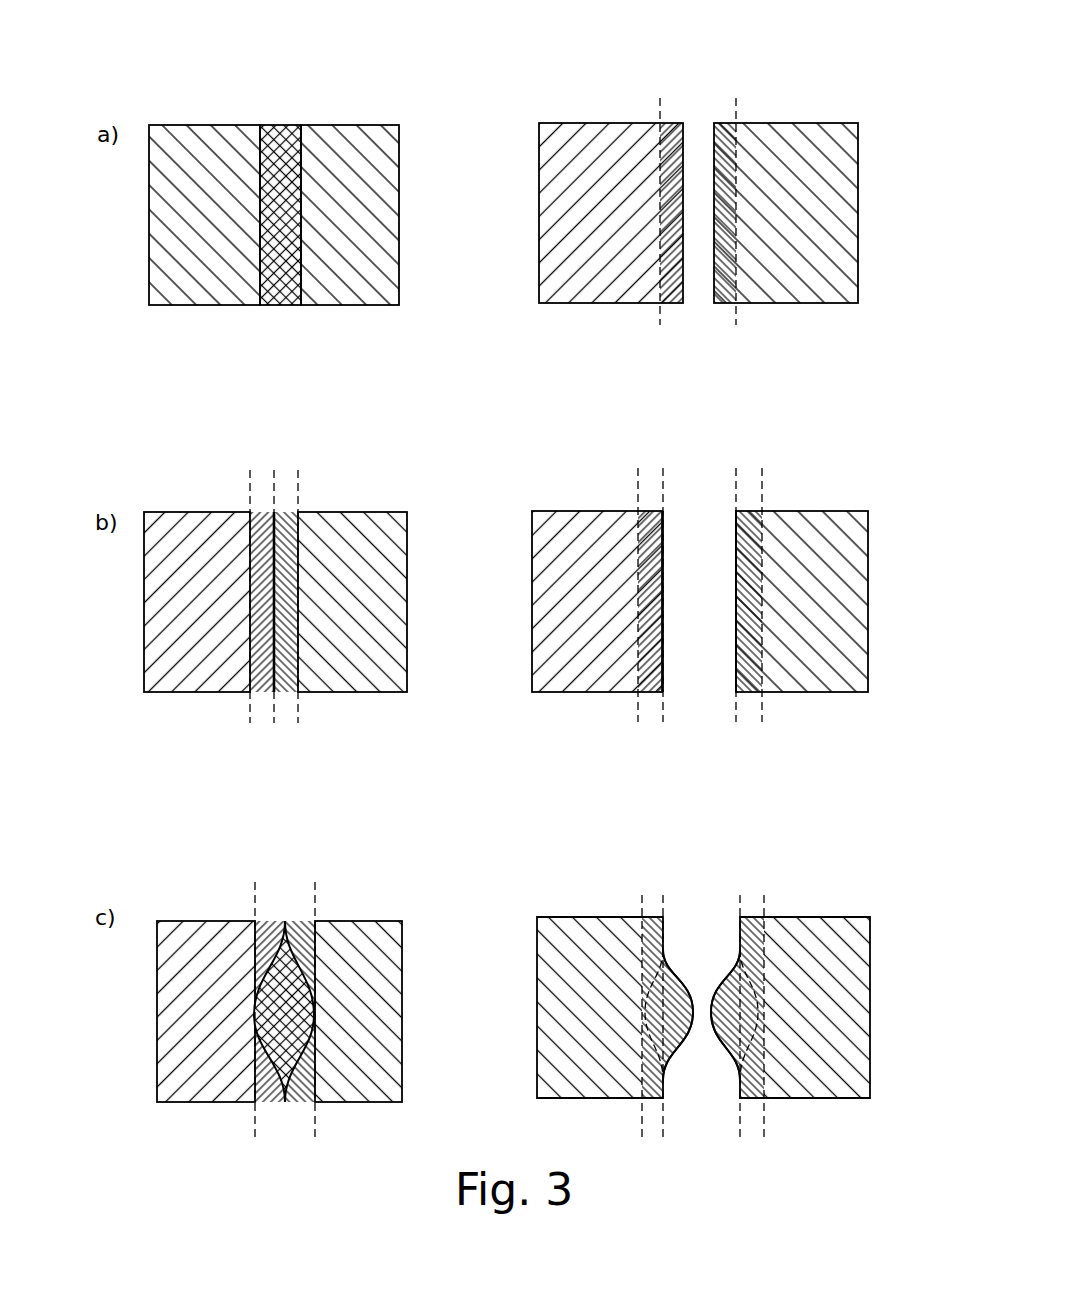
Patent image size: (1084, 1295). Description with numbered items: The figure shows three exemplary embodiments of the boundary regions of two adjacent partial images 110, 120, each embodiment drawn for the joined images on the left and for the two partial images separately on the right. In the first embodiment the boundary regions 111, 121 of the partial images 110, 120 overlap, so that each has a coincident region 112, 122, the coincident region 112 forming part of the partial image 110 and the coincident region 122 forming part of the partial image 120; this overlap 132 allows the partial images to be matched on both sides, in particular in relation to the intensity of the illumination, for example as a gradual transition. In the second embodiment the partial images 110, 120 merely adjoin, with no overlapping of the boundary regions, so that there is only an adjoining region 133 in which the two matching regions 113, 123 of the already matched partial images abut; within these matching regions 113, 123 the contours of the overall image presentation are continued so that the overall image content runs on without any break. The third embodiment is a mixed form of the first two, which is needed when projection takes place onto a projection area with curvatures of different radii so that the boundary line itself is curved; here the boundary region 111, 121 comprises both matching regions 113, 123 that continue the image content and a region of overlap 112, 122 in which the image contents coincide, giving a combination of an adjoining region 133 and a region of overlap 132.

The partial image 110 is at (192, 292).
The boundary region 111 is at (669, 305).
The coincident region 112 is at (674, 122).
The matching region 113 is at (668, 680).
The partial image 120 is at (353, 293).
The boundary region 121 is at (723, 305).
The coincident region 122 is at (717, 122).
The matching region 123 is at (732, 684).
The overlap 132 is at (283, 135).
The adjoining region 133 is at (274, 504).